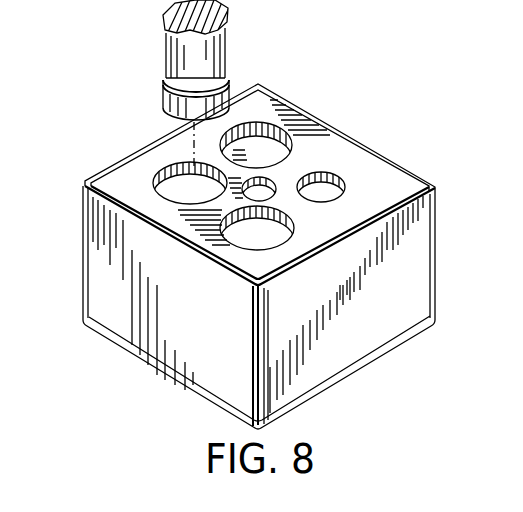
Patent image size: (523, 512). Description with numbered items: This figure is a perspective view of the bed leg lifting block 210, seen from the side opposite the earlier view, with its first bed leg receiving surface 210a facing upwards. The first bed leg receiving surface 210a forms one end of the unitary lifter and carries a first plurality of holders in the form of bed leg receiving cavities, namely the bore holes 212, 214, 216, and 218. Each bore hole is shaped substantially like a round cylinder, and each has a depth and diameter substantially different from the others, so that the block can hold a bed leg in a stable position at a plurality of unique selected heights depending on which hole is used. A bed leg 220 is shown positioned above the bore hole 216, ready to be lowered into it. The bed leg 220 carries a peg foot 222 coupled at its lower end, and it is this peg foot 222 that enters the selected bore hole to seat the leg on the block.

The bed leg lifting block 210 is at (298, 239).
The first bed leg receiving surface 210a is at (372, 178).
The bore hole 212 is at (265, 140).
The bore hole 214 is at (328, 173).
The bore hole 216 is at (163, 167).
The bore hole 218 is at (293, 236).
The bed leg 220 is at (210, 84).
The peg foot 222 is at (163, 86).